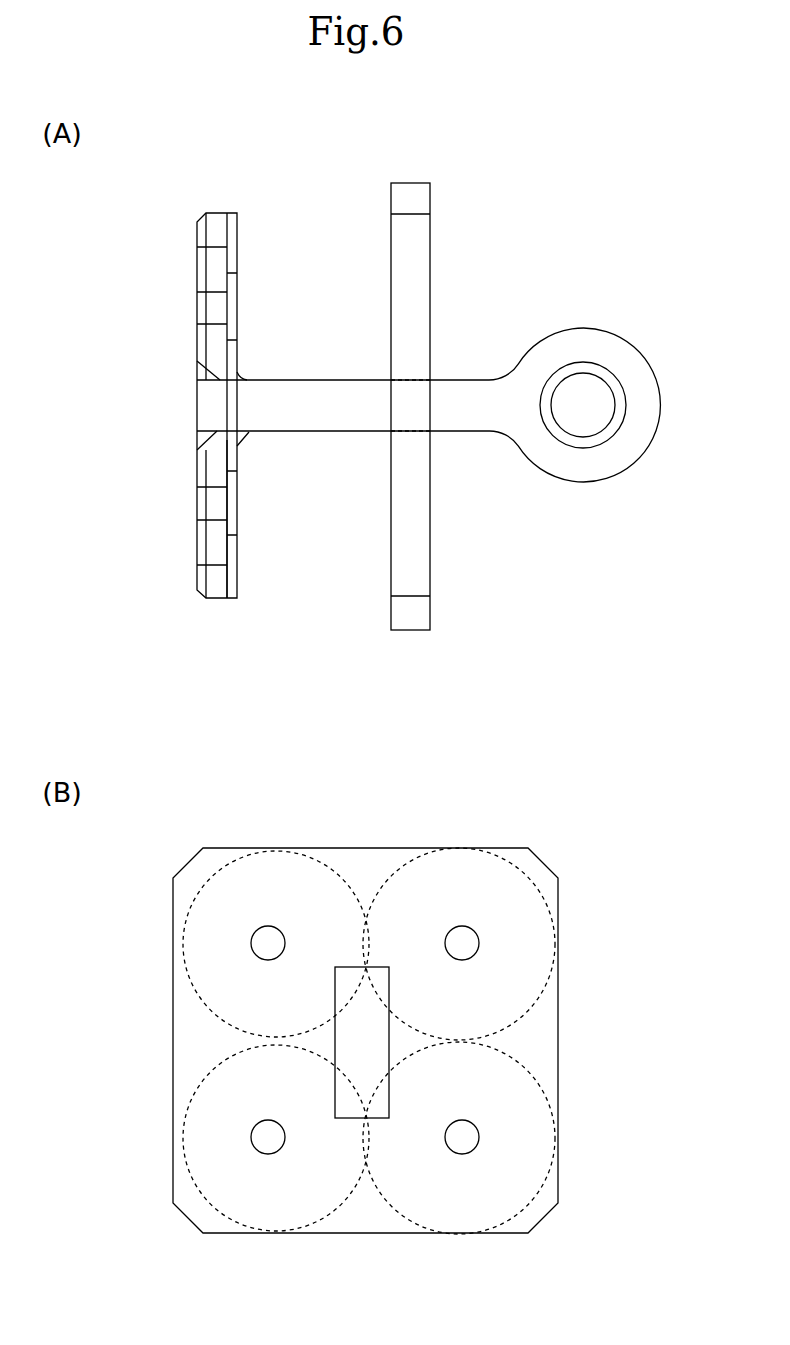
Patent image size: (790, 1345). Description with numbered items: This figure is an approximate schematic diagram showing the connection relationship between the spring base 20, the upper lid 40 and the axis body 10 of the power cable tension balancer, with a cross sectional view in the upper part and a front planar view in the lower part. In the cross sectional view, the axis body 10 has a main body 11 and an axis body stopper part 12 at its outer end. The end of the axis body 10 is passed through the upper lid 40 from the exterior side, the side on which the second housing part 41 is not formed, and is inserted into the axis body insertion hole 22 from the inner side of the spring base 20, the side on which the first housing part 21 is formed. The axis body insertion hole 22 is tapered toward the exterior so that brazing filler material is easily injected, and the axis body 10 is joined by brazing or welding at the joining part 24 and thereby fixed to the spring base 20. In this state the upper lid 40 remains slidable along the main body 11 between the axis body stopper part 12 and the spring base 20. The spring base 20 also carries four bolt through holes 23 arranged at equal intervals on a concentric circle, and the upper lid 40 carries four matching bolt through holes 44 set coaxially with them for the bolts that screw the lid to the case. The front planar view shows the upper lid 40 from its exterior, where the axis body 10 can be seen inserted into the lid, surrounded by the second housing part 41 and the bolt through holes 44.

The axis body 10 is at (516, 817).
The main body 11 is at (334, 396).
The axis body stopper part 12 is at (613, 418).
The spring base 20 is at (224, 371).
The first housing part 21 is at (235, 508).
The axis body insertion hole 22 is at (212, 405).
The bolt through hole 23 is at (218, 502).
The joining part 24 is at (245, 377).
The upper lid 40 is at (413, 190).
The second housing part 41 is at (505, 985).
The bolt through hole 44 is at (460, 1137).